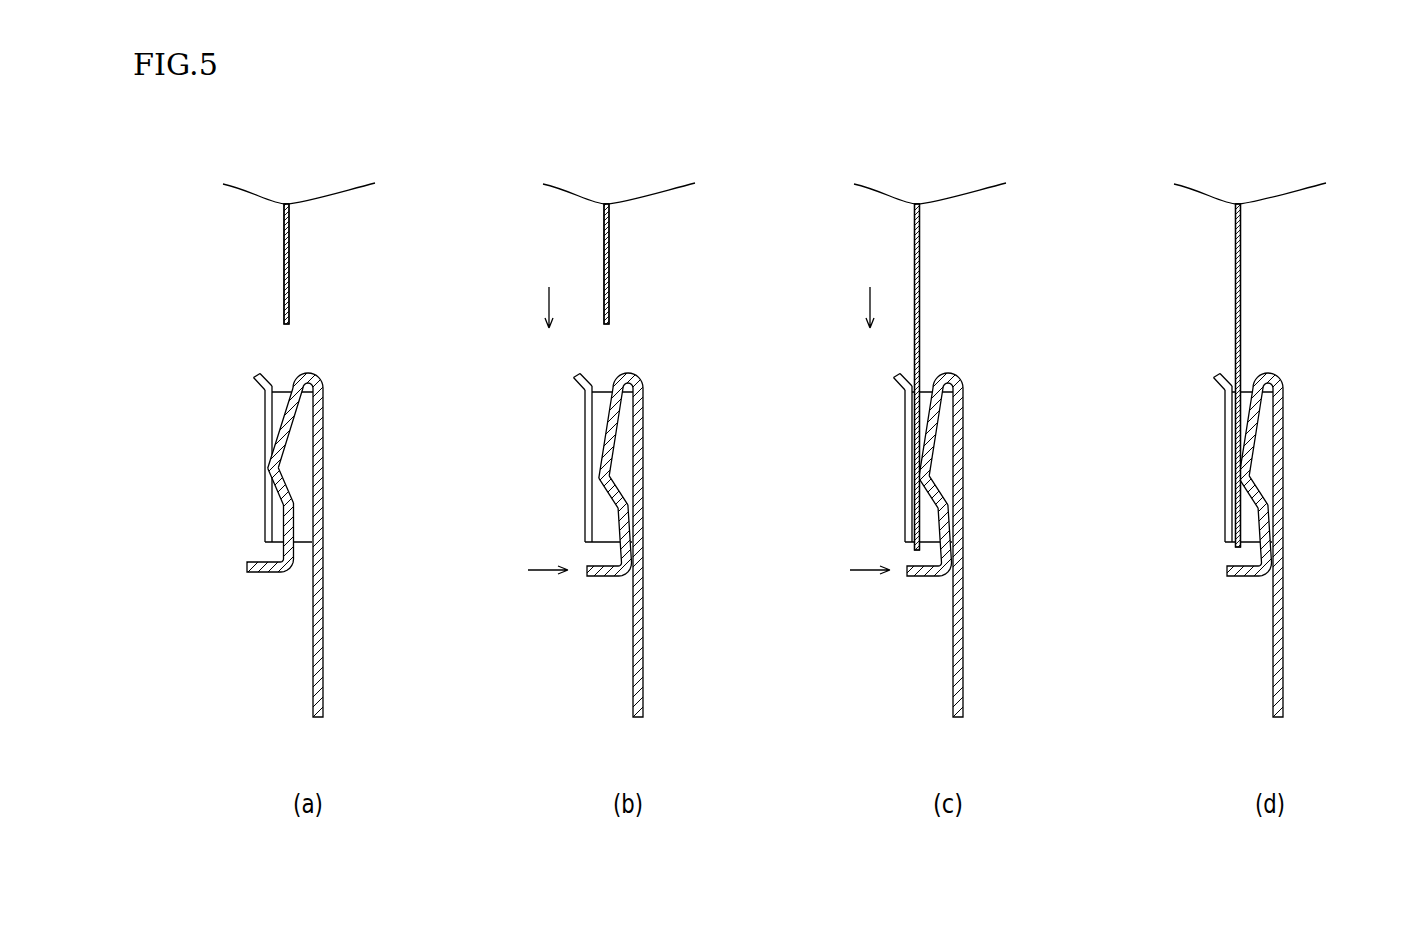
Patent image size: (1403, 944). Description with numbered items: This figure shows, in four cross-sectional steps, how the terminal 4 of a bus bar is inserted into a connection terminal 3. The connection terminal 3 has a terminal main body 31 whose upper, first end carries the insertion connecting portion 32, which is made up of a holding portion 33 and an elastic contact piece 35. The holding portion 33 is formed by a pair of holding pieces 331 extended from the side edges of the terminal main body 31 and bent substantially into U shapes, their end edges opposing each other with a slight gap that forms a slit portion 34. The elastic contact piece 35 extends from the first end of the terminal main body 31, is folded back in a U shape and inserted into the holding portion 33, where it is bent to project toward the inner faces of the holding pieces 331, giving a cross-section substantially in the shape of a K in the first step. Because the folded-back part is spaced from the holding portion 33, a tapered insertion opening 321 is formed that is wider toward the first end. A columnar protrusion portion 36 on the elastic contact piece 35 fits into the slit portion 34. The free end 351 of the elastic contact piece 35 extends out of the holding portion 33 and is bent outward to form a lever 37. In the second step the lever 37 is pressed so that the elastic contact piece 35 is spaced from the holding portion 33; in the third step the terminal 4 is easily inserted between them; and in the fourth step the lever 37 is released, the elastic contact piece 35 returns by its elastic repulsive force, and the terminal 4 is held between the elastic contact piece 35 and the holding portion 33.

The connection terminal 3 is at (761, 542).
The terminal main body 31 is at (322, 647).
The insertion connecting portion 32 is at (803, 346).
The tapered insertion opening 321 is at (276, 382).
The holding portion 33 is at (785, 423).
The holding piece 331 is at (303, 418).
The slit portion 34 is at (265, 404).
The elastic contact piece 35 is at (275, 438).
The free end 351 is at (247, 565).
The protrusion portion 36 is at (265, 472).
The lever 37 is at (713, 585).
The terminal of the bus bar 4 is at (289, 292).